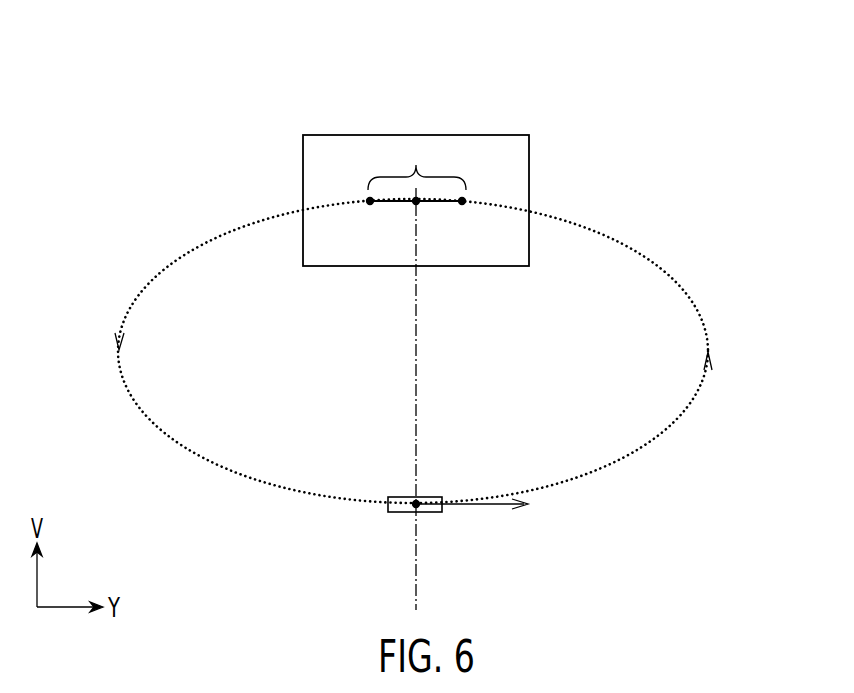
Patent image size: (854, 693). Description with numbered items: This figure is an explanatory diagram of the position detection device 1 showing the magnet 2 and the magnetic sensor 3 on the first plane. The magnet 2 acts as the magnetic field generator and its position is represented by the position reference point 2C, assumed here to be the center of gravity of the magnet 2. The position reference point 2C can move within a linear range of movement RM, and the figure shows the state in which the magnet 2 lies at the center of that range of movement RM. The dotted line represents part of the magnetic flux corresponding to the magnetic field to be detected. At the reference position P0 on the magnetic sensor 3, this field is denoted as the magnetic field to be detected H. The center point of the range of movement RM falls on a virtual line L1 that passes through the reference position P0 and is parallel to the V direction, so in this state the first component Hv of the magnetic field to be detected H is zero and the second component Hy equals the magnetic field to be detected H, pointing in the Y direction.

The position detection device 1 is at (472, 75).
The magnet 2 is at (519, 135).
The range of movement RM is at (416, 165).
The position reference point 2C is at (416, 203).
The virtual line L1 is at (420, 380).
The magnetic sensor 3 is at (395, 512).
The reference position P0 is at (418, 506).
The magnetic field to be detected H is at (496, 517).